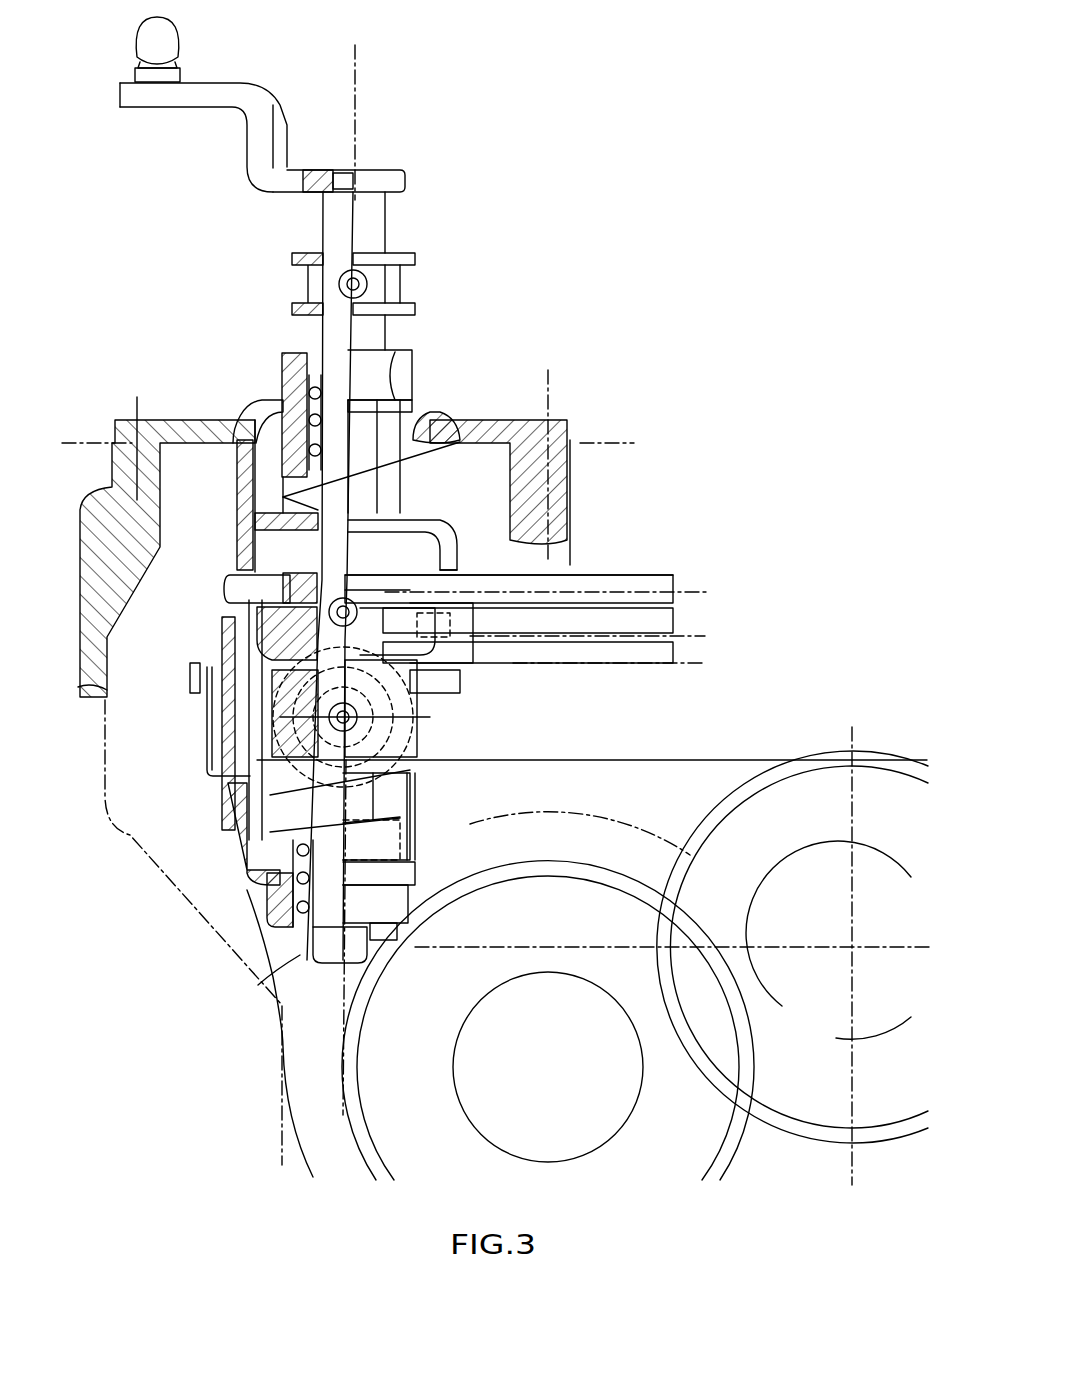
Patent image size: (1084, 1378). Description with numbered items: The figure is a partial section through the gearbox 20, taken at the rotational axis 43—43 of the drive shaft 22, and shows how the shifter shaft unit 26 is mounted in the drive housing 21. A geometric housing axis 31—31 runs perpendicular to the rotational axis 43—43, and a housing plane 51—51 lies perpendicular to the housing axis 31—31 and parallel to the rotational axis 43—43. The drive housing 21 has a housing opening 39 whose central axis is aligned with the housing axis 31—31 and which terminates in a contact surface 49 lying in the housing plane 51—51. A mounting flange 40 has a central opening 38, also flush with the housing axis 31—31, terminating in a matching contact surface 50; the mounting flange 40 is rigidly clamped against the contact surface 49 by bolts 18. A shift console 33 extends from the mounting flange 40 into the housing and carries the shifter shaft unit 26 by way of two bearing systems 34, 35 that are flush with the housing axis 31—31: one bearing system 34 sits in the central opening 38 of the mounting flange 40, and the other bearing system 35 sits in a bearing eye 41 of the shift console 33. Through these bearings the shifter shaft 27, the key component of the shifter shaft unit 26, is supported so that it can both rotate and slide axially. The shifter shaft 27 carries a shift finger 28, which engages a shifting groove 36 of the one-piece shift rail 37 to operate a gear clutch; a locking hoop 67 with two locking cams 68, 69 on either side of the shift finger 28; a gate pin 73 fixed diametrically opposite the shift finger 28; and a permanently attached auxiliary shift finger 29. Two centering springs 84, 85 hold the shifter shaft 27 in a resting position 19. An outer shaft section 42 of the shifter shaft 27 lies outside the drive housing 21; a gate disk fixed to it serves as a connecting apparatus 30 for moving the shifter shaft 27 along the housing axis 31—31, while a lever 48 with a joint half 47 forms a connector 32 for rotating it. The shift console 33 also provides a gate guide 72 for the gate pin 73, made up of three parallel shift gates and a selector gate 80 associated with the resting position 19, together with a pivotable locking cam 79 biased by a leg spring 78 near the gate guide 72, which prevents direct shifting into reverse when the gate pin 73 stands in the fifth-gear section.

The bolts 18 is at (136, 412).
The resting position 19 is at (688, 578).
The gearbox 20 is at (864, 735).
The drive housing 21 is at (568, 484).
The drive shaft 22 is at (876, 855).
The shifter shaft unit 26 is at (436, 772).
The shifter shaft 27 is at (306, 951).
The shift finger 28 is at (455, 590).
The auxiliary shift finger 29 is at (440, 685).
The connecting apparatus 30 is at (412, 252).
The housing axis 31 is at (357, 125).
The connector 32 is at (224, 82).
The shift console 33 is at (228, 806).
The bearing system 34 is at (430, 372).
The bearing system 35 is at (388, 926).
The shifting groove 36 is at (470, 610).
The shift rail 37 is at (642, 574).
The central opening 38 is at (400, 365).
The housing opening 39 is at (178, 465).
The mounting flange 40 is at (484, 412).
The bearing eye 41 is at (258, 872).
The outer shaft section 42 is at (322, 228).
The rotational axis 43 is at (853, 950).
The joint half 47 is at (145, 46).
The lever 48 is at (198, 100).
The contact surface 49 is at (552, 420).
The contact surface 50 is at (125, 452).
The housing plane 51 is at (118, 430).
The locking hoop 67 is at (440, 518).
The locking cam 68 is at (465, 545).
The locking cam 69 is at (440, 625).
The gate guide 72 is at (258, 552).
The gate pin 73 is at (228, 596).
The leg spring 78 is at (212, 740).
The locking cam 79 is at (212, 632).
The selector gate 80 is at (248, 620).
The centering spring 84 is at (460, 412).
The centering spring 85 is at (393, 818).